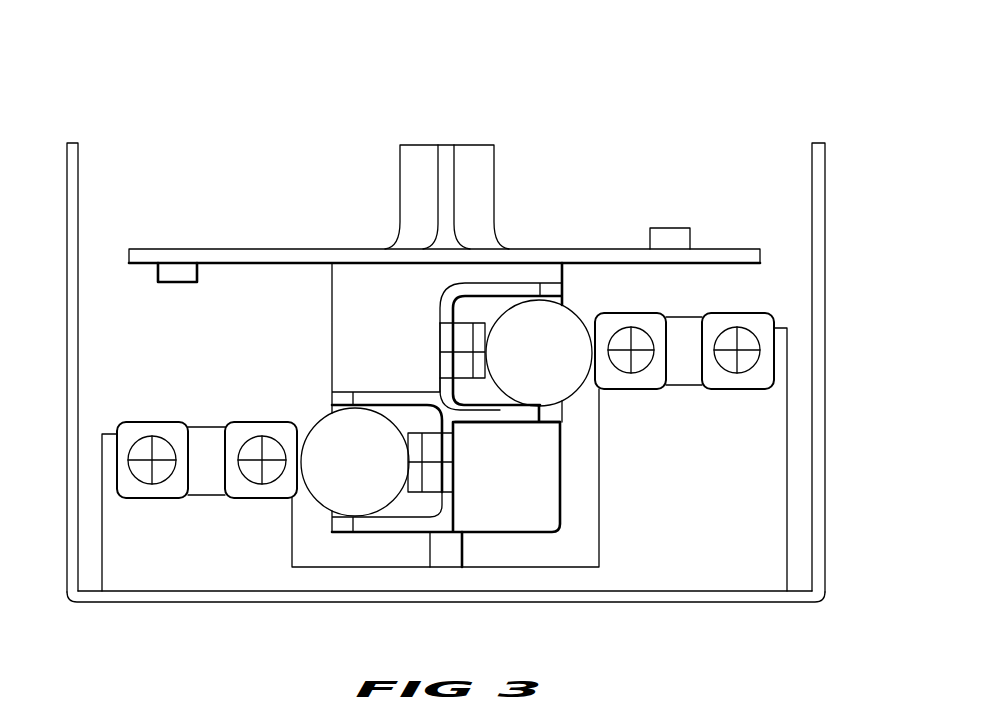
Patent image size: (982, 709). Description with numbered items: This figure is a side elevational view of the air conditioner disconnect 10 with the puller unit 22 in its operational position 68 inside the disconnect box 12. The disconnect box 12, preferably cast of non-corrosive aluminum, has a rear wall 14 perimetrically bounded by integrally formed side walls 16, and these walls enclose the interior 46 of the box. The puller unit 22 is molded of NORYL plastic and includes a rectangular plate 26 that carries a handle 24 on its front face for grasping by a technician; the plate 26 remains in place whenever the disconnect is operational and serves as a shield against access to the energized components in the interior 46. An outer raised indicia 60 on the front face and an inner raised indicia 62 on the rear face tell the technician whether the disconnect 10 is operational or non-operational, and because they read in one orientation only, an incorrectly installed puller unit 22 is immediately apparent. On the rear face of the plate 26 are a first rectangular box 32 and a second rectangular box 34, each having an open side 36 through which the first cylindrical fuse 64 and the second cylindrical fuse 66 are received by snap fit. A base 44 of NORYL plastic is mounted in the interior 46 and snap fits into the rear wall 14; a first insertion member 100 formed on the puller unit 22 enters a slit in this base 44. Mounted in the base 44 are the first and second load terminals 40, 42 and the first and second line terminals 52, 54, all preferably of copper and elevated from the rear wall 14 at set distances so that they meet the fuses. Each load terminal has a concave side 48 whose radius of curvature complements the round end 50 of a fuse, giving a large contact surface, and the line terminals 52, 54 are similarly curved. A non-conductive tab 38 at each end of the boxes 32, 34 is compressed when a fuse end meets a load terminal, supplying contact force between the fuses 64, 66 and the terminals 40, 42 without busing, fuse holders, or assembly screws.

The air conditioner disconnect 10 is at (378, 78).
The disconnect box 12 is at (705, 78).
The rear wall 14 is at (130, 603).
The side walls 16 is at (67, 420).
The puller unit 22 is at (368, 147).
The handle 24 is at (495, 178).
The plate 26 is at (305, 253).
The first rectangular box 32 is at (393, 392).
The second rectangular box 34 is at (443, 296).
The open side 36 is at (570, 300).
The tab 38 is at (457, 340).
The first load terminal 40 is at (255, 426).
The second load terminal 42 is at (638, 317).
The base 44 is at (728, 617).
The interior 46 is at (750, 552).
The concave side 48 is at (300, 440).
The round end 50 is at (590, 349).
The first line terminal 52 is at (148, 426).
The second line terminal 54 is at (760, 383).
The outer raised indicia 60 is at (668, 237).
The inner raised indicia 62 is at (173, 284).
The first cylindrical fuse 64 is at (340, 495).
The second cylindrical fuse 66 is at (525, 387).
The operational position 68 is at (567, 100).
The first insertion member 100 is at (465, 553).